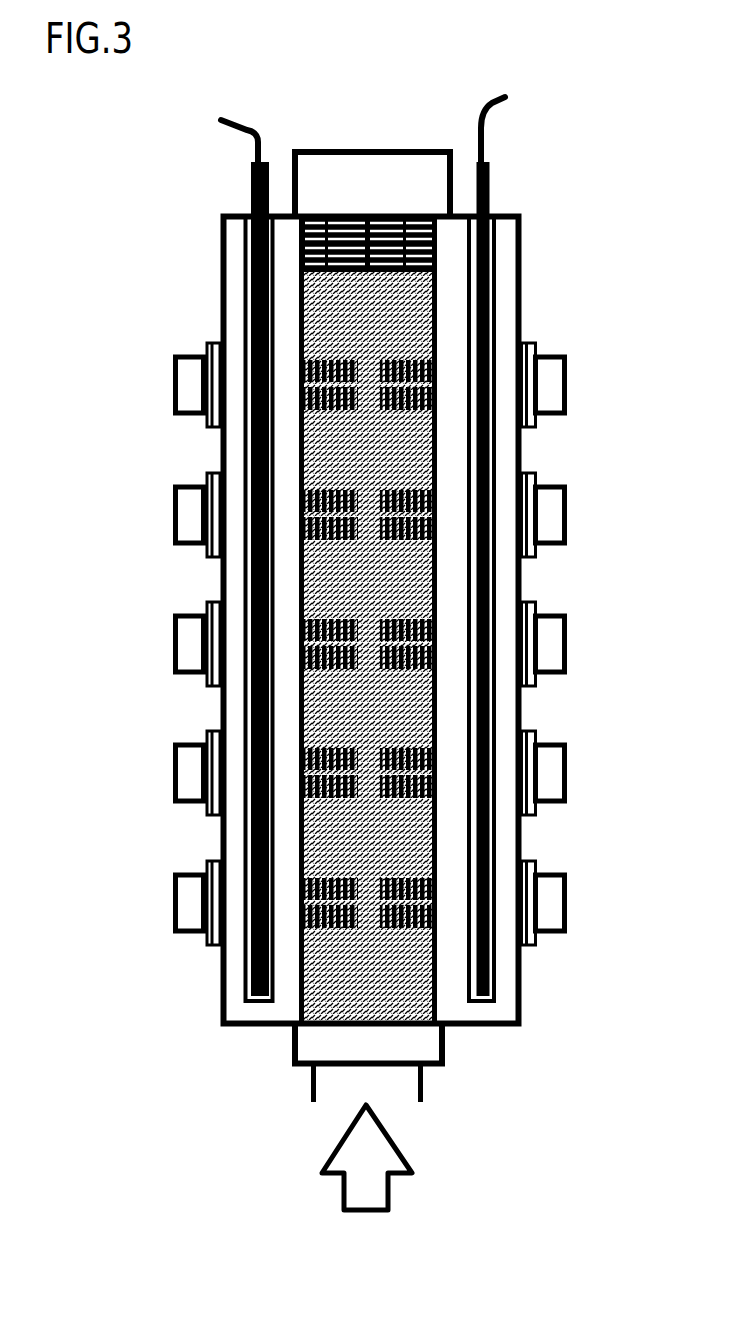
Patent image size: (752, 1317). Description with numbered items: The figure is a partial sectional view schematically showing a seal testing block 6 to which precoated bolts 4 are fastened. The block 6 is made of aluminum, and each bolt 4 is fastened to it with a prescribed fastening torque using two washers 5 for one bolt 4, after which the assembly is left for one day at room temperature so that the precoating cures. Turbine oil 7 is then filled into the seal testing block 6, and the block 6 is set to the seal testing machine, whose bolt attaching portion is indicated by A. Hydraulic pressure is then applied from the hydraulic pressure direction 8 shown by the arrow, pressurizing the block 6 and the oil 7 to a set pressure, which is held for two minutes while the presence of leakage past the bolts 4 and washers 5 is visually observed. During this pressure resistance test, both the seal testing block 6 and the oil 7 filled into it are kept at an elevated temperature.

The bolt 4 is at (165, 481).
The washer 5 is at (186, 565).
The seal testing block 6 is at (525, 268).
The oil 7 is at (327, 320).
The hydraulic pressure direction 8 is at (367, 1200).
The seal testing machine (bolt attaching portion) A is at (389, 101).